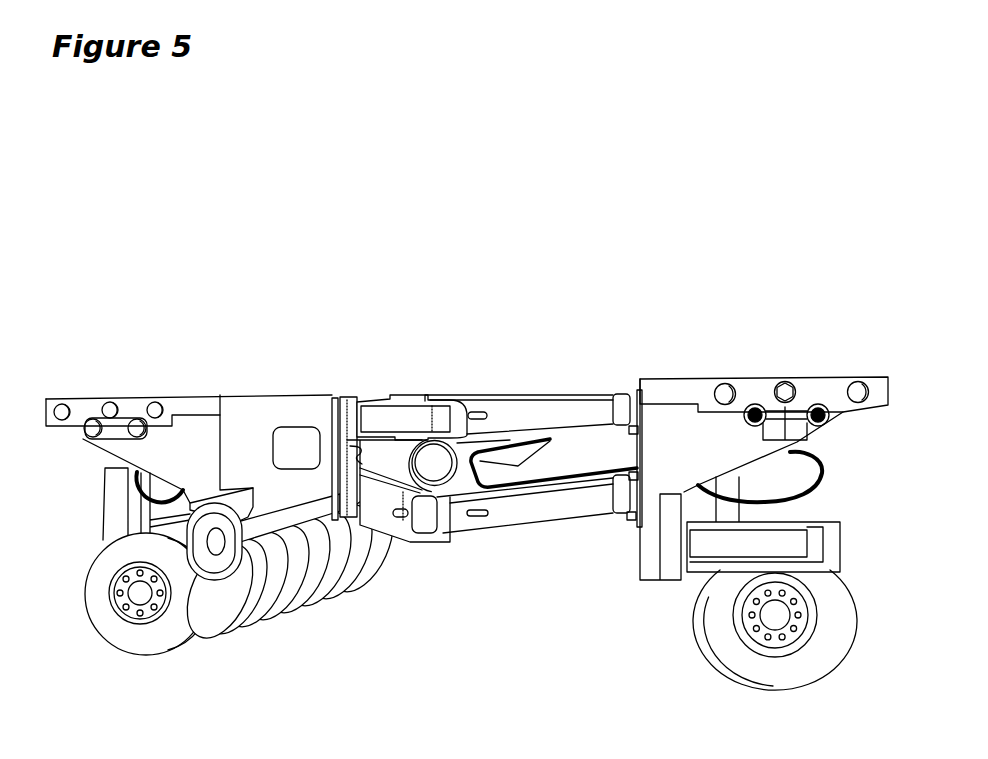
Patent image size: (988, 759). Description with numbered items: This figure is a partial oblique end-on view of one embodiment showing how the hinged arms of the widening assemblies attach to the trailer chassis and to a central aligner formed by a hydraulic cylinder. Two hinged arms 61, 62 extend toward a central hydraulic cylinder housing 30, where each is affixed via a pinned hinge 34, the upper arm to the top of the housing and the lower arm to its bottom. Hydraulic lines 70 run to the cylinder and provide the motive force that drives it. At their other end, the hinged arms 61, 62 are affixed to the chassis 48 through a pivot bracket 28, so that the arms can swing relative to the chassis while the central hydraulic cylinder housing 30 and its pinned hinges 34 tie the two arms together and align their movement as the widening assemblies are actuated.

The chassis 48 is at (273, 415).
The pivot bracket 28 is at (324, 412).
The hinged arm 61 is at (383, 417).
The pinned hinge 34 is at (434, 395).
The central hydraulic cylinder housing 30 is at (458, 468).
The hydraulic lines 70 is at (495, 447).
The hinged arm 62 is at (380, 498).